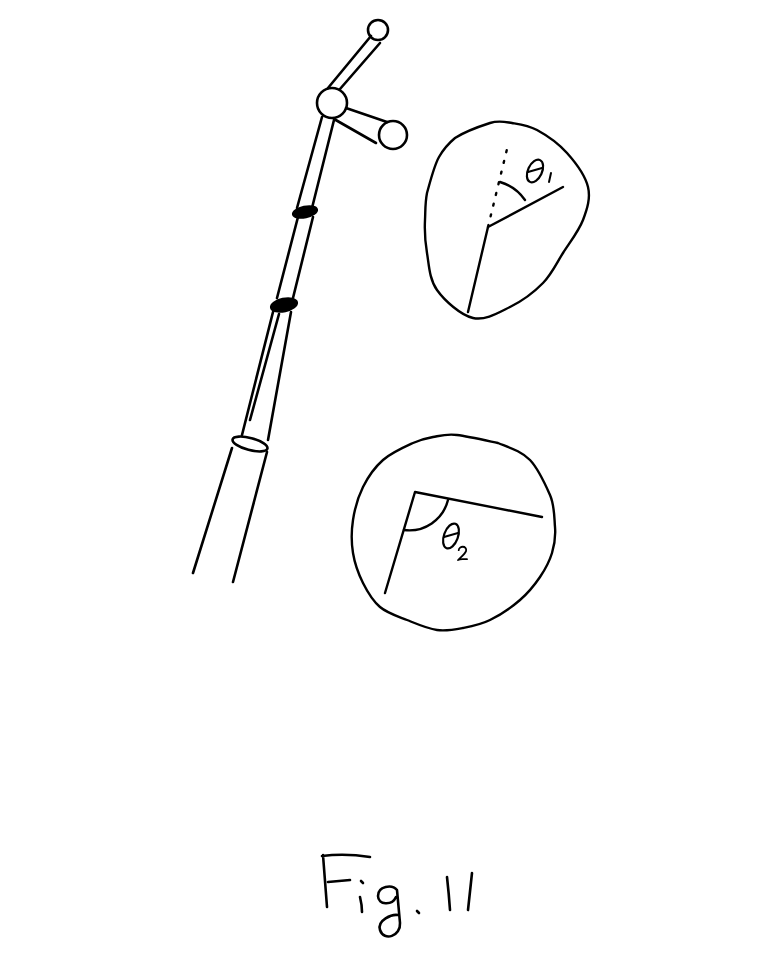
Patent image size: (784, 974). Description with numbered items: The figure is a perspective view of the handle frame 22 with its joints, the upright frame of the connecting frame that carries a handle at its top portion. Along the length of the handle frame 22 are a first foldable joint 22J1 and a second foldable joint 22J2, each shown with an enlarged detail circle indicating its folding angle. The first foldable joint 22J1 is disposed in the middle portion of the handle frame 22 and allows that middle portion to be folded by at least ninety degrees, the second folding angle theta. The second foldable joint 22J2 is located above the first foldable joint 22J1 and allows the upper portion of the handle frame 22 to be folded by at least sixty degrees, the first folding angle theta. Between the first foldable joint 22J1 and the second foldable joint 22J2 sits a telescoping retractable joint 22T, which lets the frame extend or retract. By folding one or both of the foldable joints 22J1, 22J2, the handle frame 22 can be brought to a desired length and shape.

The handle frame 22 is at (218, 301).
The telescoping retractable joint 22T is at (32, 314).
The second foldable joint 22J2 is at (743, 216).
The first foldable joint 22J1 is at (697, 568).